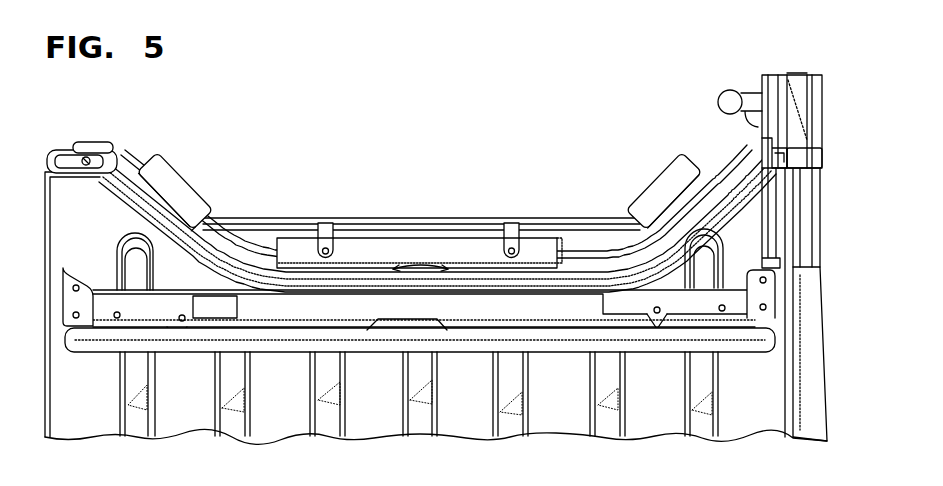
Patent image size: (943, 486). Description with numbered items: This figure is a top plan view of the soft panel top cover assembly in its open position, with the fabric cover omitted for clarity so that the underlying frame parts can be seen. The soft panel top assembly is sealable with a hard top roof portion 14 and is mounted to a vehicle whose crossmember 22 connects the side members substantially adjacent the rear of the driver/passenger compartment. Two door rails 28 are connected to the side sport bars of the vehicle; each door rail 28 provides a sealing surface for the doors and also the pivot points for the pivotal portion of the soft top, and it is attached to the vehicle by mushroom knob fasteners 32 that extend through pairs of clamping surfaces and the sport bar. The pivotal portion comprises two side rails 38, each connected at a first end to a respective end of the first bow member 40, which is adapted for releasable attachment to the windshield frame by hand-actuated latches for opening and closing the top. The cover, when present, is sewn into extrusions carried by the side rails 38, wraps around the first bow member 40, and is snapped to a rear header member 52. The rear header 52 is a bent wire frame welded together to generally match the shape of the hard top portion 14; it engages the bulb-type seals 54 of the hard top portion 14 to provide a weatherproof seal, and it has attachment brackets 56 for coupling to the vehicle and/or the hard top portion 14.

The hard top roof portion 14 is at (826, 318).
The crossmember 22 is at (581, 239).
The door rail 28 is at (753, 84).
The mushroom knob fastener 32 is at (726, 99).
The side rail 38 is at (762, 140).
The first bow member 40 is at (757, 346).
The rear header member 52 is at (573, 255).
The seal 54 is at (639, 248).
The attachment bracket 56 is at (327, 224).